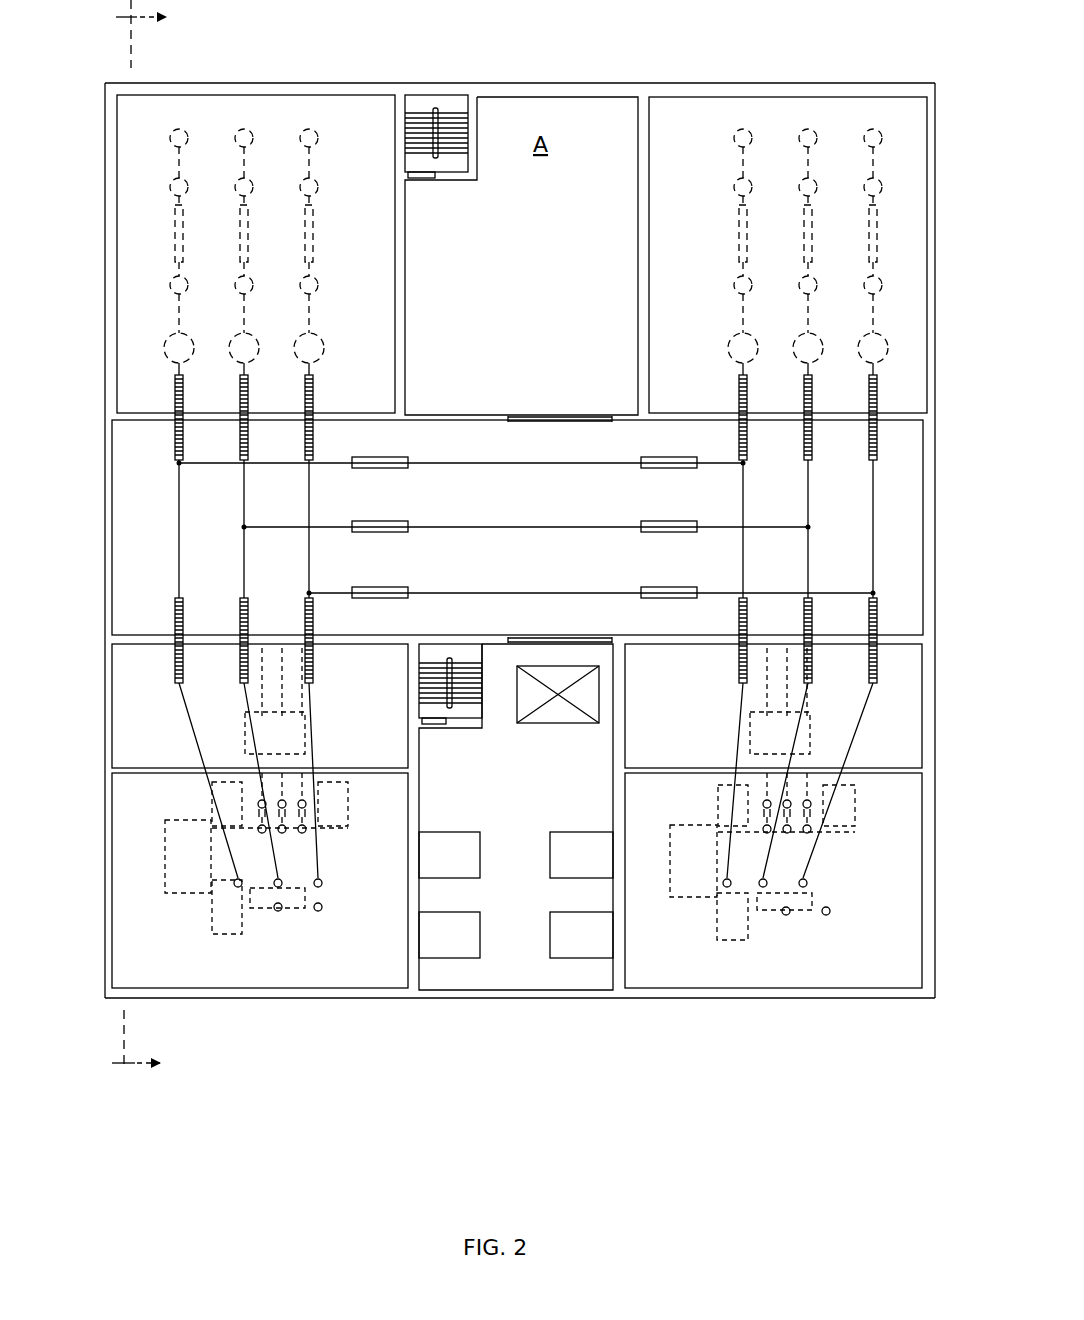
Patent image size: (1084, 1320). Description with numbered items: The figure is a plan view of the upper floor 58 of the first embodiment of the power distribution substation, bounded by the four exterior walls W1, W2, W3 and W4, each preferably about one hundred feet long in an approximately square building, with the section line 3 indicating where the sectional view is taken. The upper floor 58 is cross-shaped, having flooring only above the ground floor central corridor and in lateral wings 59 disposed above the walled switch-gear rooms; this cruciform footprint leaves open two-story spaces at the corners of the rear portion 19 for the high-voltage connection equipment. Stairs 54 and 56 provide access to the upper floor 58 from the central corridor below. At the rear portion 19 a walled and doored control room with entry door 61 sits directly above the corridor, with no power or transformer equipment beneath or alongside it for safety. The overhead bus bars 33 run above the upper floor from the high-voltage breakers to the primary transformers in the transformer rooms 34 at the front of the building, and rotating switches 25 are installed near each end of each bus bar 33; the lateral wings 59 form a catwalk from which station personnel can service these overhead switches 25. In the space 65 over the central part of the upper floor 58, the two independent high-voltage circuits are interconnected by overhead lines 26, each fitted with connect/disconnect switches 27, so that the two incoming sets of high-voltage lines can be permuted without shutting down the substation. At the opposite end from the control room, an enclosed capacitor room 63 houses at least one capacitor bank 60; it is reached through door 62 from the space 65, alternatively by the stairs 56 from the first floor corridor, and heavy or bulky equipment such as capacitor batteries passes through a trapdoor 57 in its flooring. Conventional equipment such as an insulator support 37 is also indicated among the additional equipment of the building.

The section line 3- 3 is at (149, 539).
The rear portion 19 is at (522, 254).
The rotating switches 25 is at (315, 402).
The overhead lines 26 is at (568, 468).
The connect/disconnect switches 27 is at (378, 522).
The bus bars 33 is at (182, 712).
The transformer rooms 34 is at (517, 818).
The insulator support 37 is at (397, 766).
The stairs 54 is at (438, 108).
The stairs 56 is at (431, 722).
The trapdoor 57 is at (592, 722).
The upper floor 58 is at (532, 506).
The lateral wings 59 is at (517, 620).
The capacitor bank 60 is at (464, 844).
The entry door 61 is at (531, 413).
The door 62 is at (544, 637).
The capacitor room 63 is at (516, 817).
The space 65 is at (526, 529).
The exterior wall W1 is at (103, 518).
The exterior wall W2 is at (606, 82).
The exterior wall W3 is at (938, 497).
The front wall W4 is at (492, 1006).